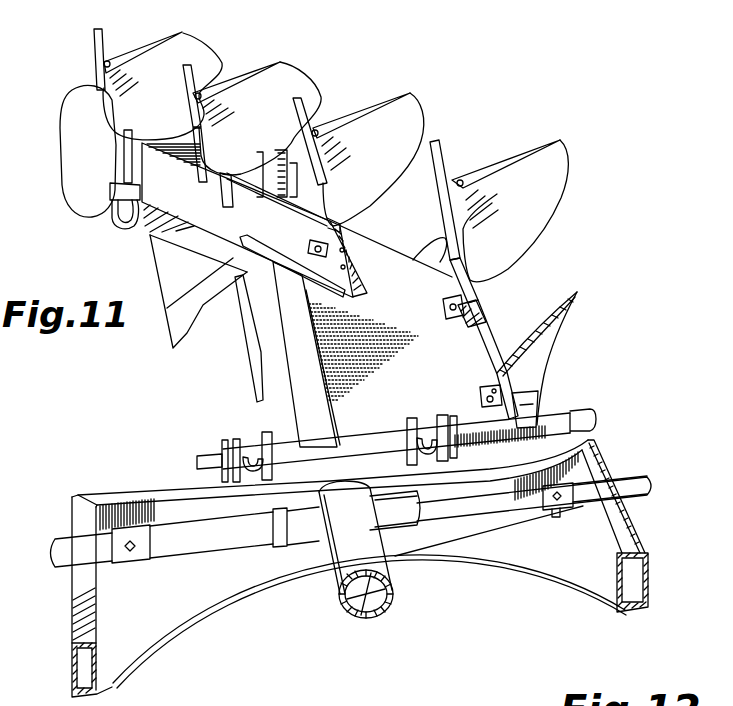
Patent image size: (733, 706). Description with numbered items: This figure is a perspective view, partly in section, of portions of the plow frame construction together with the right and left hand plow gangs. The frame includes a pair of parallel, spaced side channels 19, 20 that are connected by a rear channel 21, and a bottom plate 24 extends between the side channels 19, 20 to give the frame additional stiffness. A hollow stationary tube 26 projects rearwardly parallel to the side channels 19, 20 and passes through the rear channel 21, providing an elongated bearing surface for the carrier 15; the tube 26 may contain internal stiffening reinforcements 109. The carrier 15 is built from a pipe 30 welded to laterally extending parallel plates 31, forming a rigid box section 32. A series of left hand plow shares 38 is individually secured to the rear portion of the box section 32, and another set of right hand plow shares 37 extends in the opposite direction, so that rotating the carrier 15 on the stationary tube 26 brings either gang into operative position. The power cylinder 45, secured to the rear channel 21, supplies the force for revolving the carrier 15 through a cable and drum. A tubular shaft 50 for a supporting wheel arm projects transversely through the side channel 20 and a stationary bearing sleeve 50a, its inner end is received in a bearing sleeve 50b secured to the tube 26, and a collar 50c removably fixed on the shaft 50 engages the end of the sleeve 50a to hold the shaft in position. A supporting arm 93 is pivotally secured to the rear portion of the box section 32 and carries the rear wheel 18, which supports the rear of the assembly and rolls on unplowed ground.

The carrier 15 is at (373, 243).
The rear wheel 18 is at (72, 182).
The side channel 19 is at (72, 658).
The side channel 20 is at (650, 575).
The rear channel 21 is at (165, 487).
The bottom plate 24 is at (200, 602).
The hollow stationary tube 26 is at (376, 560).
The pipe 30 is at (297, 367).
The parallel plates 31 is at (461, 322).
The box section 32 is at (487, 373).
The right hand plow shares 37 is at (195, 50).
The left hand plow shares 38 is at (200, 308).
The power cylinder 45 is at (350, 435).
The tubular shaft 50 is at (371, 502).
The stationary bearing sleeve 50a is at (587, 502).
The stationary bearing sleeve 50b is at (399, 502).
The collar 50c is at (551, 518).
The supporting arm 93 is at (100, 217).
The internal stiffening reinforcements 109 is at (348, 606).